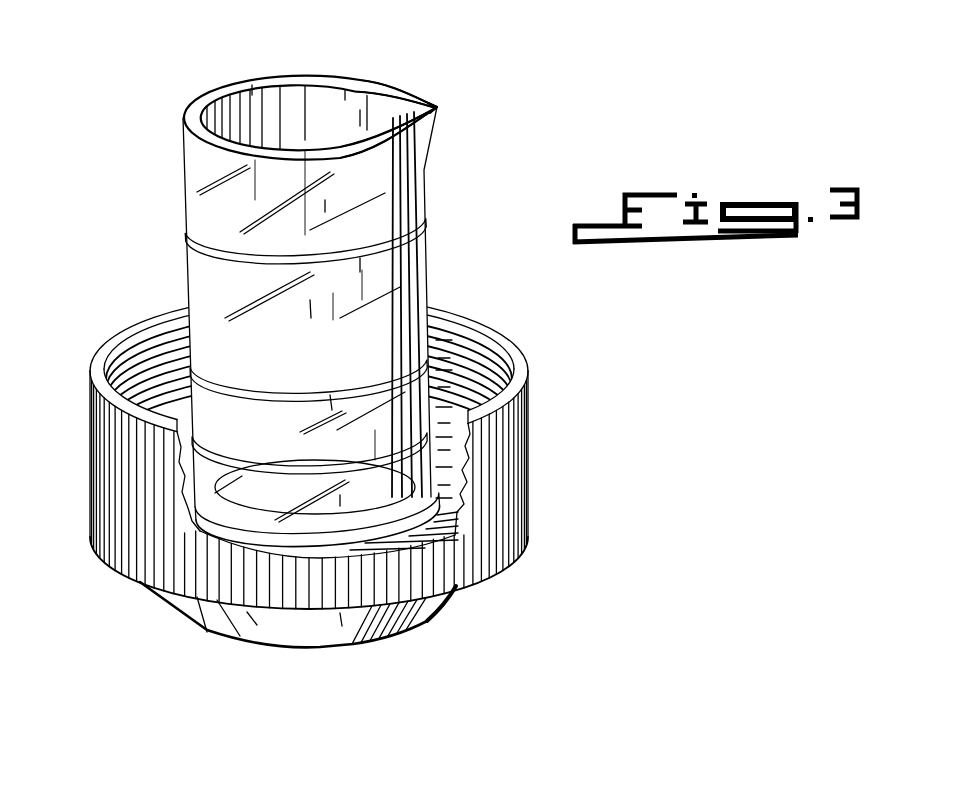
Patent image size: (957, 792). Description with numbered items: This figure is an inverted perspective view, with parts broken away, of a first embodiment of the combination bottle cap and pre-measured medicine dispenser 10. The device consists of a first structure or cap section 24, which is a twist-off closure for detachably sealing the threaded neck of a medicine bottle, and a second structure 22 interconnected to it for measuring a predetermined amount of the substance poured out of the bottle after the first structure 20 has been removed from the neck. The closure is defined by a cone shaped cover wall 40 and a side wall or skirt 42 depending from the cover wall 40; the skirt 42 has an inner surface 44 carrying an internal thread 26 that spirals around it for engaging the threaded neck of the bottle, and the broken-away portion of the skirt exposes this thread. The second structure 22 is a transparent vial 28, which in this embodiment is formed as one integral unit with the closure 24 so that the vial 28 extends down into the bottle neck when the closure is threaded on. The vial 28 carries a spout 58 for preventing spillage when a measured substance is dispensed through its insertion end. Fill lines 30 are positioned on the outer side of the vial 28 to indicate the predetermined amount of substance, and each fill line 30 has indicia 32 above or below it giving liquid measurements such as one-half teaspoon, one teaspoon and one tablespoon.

The combination bottle cap and pre-measured medicine dispenser 10 is at (315, 329).
The first structure 20 is at (315, 471).
The second structure 22 is at (428, 168).
The first structure or cap section 24 is at (504, 463).
The internal thread 26 is at (432, 349).
The transparent vial 28 is at (184, 177).
The fill lines 30 is at (184, 237).
The indicia 32 is at (262, 370).
The cone shaped cover wall 40 is at (438, 633).
The side wall or skirt 42 is at (532, 503).
The inner surface 44 is at (500, 324).
The spout 58 is at (438, 105).